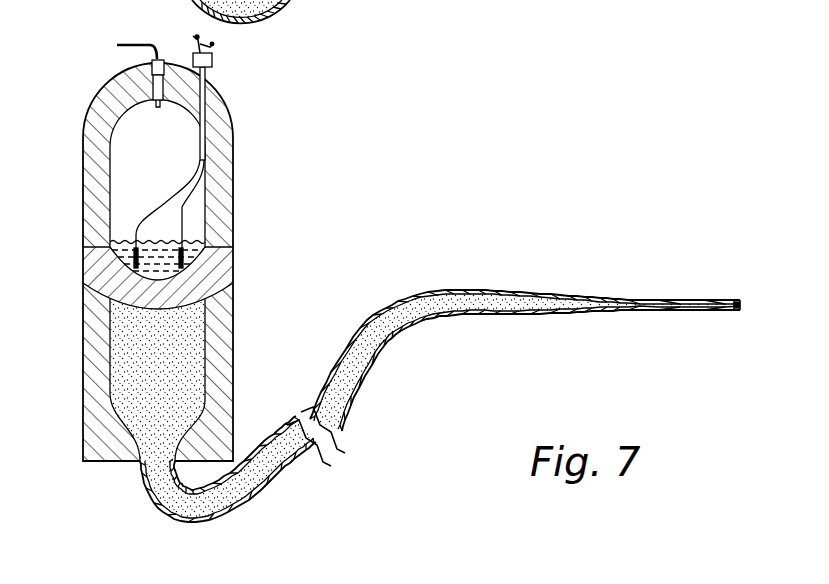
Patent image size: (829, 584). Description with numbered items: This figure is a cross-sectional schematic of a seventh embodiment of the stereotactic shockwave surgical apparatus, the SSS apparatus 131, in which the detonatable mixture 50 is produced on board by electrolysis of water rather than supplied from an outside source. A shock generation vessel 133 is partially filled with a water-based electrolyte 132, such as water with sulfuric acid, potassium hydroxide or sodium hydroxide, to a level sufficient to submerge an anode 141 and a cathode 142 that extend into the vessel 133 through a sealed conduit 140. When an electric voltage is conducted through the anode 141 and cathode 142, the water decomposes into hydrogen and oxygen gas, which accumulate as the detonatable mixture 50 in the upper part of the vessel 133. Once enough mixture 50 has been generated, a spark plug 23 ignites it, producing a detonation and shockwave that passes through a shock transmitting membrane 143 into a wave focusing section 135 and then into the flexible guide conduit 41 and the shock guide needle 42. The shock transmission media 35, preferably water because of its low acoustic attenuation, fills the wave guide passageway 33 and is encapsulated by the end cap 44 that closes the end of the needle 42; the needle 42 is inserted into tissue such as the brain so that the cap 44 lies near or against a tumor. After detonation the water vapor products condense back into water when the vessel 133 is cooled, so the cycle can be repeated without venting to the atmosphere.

The spark plug 23 is at (163, 58).
The wave guide passageway 33 is at (358, 386).
The shock transmission media 35 is at (110, 353).
The flexible conduit 41 is at (525, 333).
The shock guide needle 42 is at (680, 298).
The end cap 44 is at (735, 312).
The detonatable mixture 50 is at (185, 154).
The SSS apparatus 131 is at (386, 265).
The water-based electrolyte 132 is at (192, 251).
The shock generation vessel 133 is at (232, 112).
The wave focusing section 135 is at (174, 372).
The sealed conduit 140 is at (212, 60).
The anode 141 is at (110, 244).
The cathode 142 is at (158, 281).
The shock transmitting membrane 143 is at (113, 282).